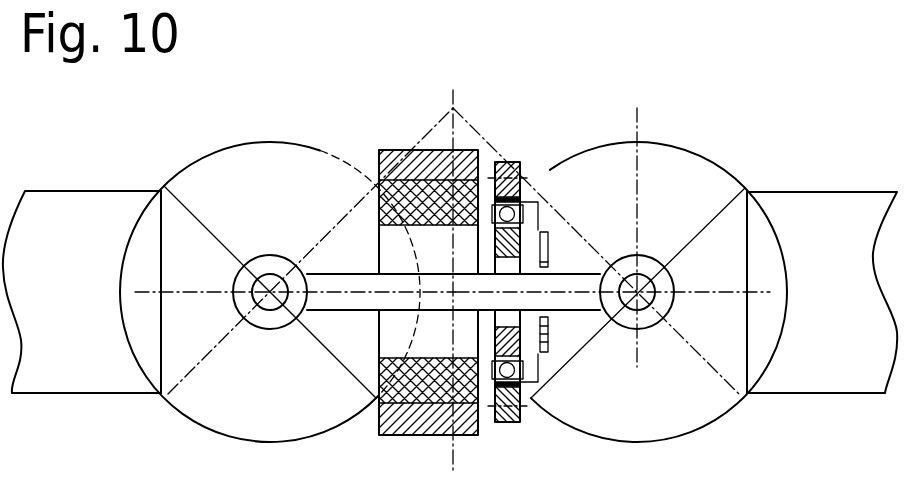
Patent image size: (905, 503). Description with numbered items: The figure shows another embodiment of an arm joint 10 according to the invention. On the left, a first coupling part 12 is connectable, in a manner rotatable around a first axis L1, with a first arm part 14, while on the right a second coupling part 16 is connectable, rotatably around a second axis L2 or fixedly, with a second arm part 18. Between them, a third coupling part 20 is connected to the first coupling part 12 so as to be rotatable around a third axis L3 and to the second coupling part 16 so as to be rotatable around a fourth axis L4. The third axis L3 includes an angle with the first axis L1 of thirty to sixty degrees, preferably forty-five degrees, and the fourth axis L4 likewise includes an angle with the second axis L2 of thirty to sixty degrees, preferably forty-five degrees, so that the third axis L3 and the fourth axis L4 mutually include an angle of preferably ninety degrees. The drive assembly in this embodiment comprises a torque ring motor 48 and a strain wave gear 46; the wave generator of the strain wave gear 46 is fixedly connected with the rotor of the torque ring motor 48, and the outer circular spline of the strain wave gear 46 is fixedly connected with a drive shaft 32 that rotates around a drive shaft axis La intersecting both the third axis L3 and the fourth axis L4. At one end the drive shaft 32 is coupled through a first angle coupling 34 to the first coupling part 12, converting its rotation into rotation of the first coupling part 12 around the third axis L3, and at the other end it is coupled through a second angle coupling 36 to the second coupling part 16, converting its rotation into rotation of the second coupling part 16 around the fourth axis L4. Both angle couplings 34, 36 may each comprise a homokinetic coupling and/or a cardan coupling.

The arm joint 10 is at (663, 85).
The first coupling part 12 is at (270, 395).
The first arm part 14 is at (88, 351).
The second coupling part 16 is at (655, 397).
The second arm part 18 is at (790, 346).
The third coupling part 20 is at (302, 175).
The drive shaft 32 is at (573, 300).
The first angle coupling 34 is at (273, 277).
The second angle coupling 36 is at (641, 258).
The strain wave gear 46 is at (522, 184).
The torque ring motor 48 is at (398, 168).
The first axis L1 is at (147, 292).
The second axis L2 is at (763, 292).
The third axis L3 is at (190, 377).
The fourth axis L4 is at (722, 377).
The drive shaft axis La is at (338, 290).